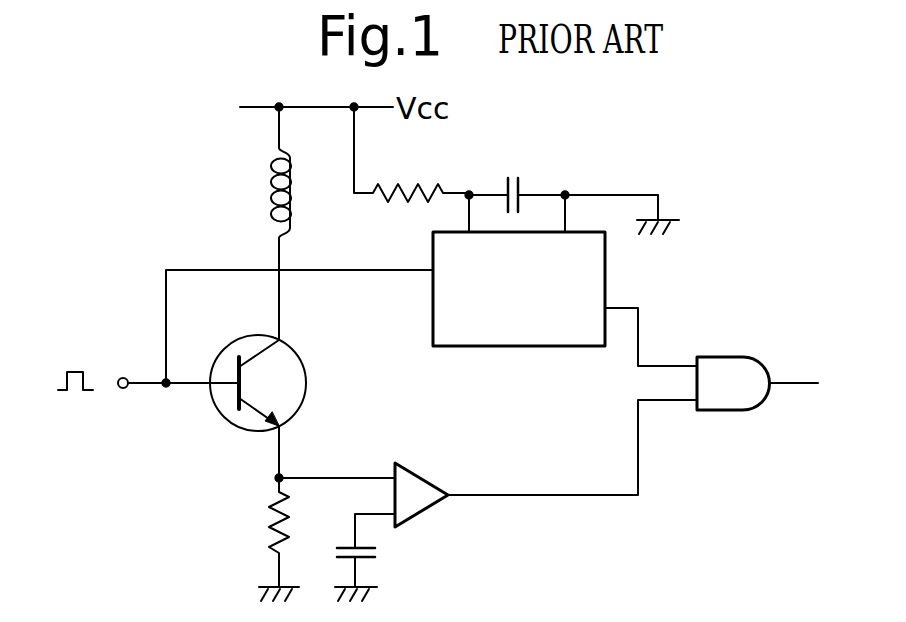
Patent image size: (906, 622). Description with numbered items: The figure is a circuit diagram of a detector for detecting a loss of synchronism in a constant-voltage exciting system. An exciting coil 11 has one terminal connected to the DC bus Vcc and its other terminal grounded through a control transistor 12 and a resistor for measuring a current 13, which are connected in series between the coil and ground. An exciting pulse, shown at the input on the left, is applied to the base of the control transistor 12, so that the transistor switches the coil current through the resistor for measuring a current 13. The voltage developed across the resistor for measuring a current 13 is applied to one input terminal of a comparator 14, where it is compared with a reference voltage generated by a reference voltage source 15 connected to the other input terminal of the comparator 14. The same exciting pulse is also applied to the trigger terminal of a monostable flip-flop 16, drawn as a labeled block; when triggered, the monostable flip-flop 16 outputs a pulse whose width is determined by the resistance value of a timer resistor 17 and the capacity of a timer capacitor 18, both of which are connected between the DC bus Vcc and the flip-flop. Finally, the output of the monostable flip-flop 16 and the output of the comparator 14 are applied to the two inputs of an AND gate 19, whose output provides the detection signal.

The exciting coil 11 is at (291, 193).
The control transistor 12 is at (306, 381).
The resistor for measuring a current 13 is at (267, 518).
The comparator 14 is at (418, 472).
The reference voltage source 15 is at (373, 562).
The monostable flip-flop 16 is at (475, 349).
The timer resistor 17 is at (416, 188).
The timer capacitor 18 is at (519, 185).
The AND gate 19 is at (722, 356).